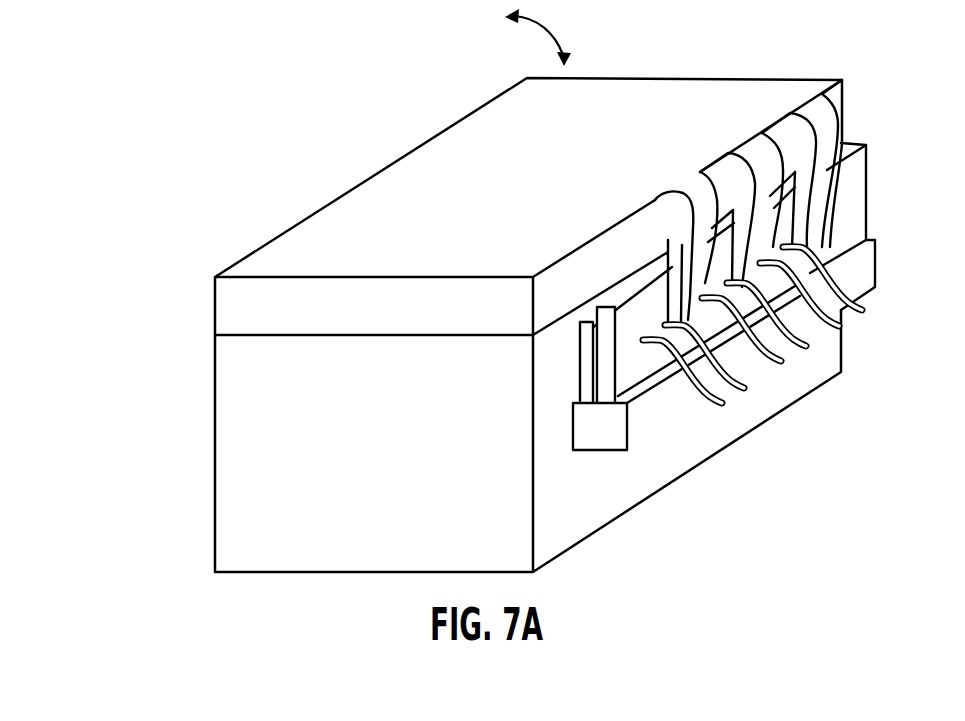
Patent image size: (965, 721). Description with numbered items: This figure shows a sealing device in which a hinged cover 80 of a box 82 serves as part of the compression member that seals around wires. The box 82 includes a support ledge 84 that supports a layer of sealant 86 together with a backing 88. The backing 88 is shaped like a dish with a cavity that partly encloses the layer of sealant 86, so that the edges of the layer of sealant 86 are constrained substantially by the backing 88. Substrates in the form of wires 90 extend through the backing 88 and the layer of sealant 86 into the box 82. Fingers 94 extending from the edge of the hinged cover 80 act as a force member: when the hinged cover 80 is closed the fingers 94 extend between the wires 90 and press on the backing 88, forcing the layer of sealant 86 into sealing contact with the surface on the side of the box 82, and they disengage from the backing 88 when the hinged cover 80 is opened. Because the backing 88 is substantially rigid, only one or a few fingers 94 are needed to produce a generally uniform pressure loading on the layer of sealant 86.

The hinged cover 80 is at (425, 182).
The box 82 is at (213, 437).
The support ledge 84 is at (868, 268).
The layer of sealant 86 is at (583, 335).
The backing 88 is at (600, 345).
The wires 90 is at (696, 410).
The spring fingers 94 is at (687, 183).